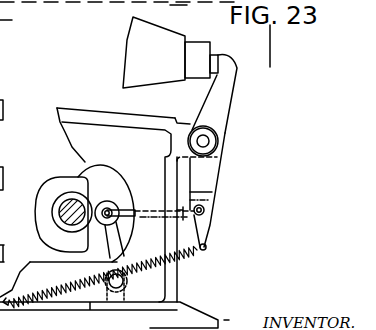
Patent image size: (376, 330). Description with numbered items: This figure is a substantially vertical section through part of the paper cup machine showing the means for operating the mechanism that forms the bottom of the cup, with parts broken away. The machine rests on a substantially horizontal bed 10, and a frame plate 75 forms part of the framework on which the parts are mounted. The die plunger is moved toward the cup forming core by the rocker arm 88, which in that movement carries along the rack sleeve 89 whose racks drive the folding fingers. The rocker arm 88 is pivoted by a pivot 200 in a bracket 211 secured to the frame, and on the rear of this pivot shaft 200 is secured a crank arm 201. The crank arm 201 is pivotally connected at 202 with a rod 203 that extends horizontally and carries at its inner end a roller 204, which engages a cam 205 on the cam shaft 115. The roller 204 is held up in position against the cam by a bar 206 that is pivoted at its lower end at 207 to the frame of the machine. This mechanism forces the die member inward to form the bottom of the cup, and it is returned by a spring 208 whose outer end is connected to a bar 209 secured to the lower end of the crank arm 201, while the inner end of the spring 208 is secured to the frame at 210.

The bed 10 is at (172, 317).
The frame plate 75 is at (93, 117).
The rocker arm 88 is at (223, 112).
The rack sleeve 89 is at (199, 52).
The cam shaft 115 is at (62, 218).
The pivot 200 is at (203, 141).
The crank arm 201 is at (207, 178).
The pivotal connection 202 is at (205, 210).
The rod 203 is at (190, 221).
The roller 204 is at (107, 198).
The cam 205 is at (60, 183).
The bar 206 is at (115, 243).
The pivot of bar 207 is at (124, 276).
The spring 208 is at (195, 250).
The bar 209 is at (210, 225).
The spring attachment to frame 210 is at (29, 286).
The bracket 211 is at (185, 127).